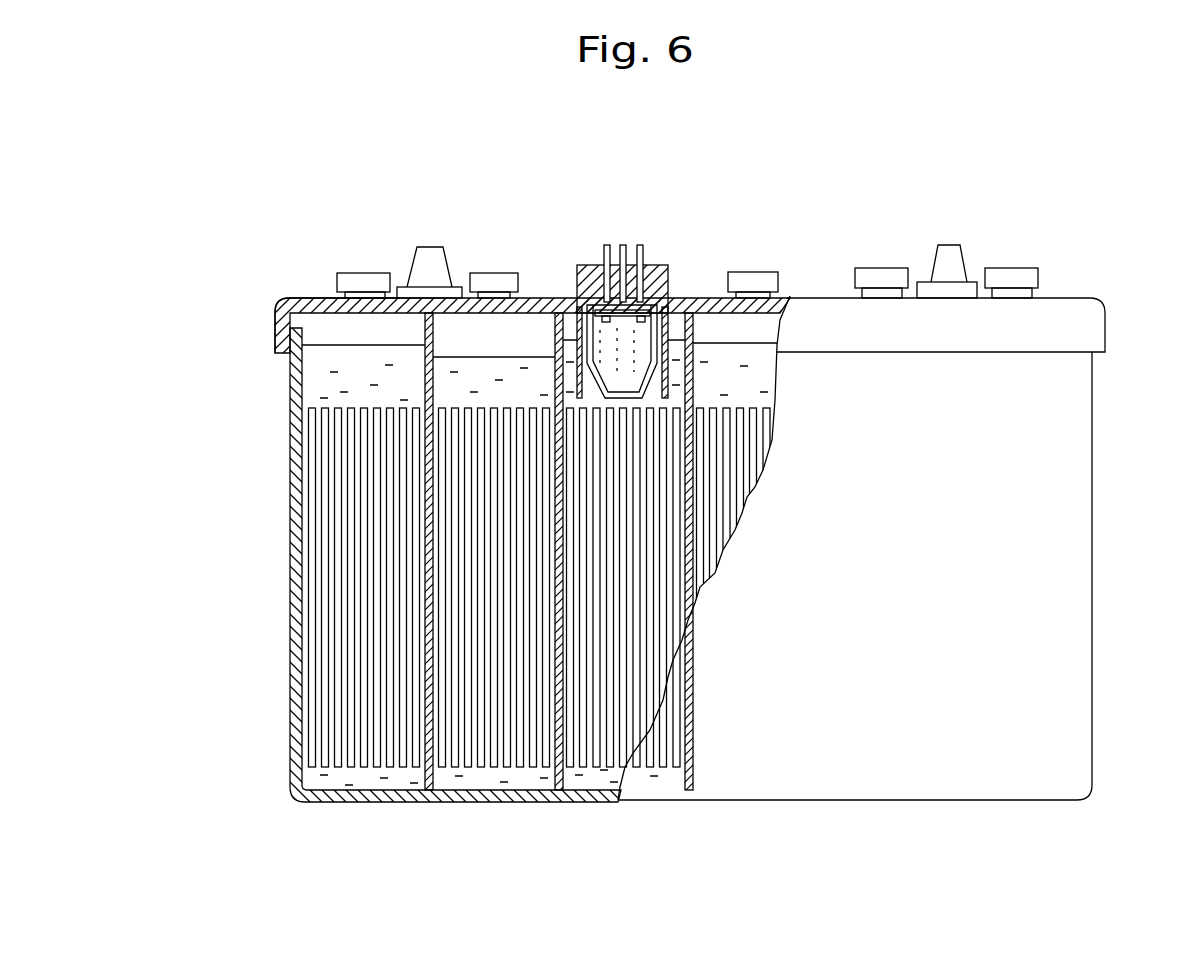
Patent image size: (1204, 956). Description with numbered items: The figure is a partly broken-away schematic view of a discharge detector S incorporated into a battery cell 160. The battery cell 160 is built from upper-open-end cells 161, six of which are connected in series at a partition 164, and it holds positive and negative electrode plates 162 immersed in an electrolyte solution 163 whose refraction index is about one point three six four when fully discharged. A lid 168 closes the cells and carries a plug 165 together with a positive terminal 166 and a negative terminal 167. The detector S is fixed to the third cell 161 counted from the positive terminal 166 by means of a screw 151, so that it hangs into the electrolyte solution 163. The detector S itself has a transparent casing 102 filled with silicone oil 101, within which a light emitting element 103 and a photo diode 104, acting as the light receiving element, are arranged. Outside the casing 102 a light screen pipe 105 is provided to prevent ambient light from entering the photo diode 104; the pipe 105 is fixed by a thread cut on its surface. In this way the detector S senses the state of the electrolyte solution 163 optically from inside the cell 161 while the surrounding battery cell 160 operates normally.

The battery cell 160 is at (288, 285).
The cell 161 is at (348, 770).
The electrode plate 162 is at (336, 667).
The electrolyte solution 163 is at (318, 390).
The partition 164 is at (422, 768).
The plug 165 is at (357, 273).
The positive terminal 166 is at (431, 250).
The negative terminal 167 is at (946, 252).
The lid 168 is at (283, 322).
The discharge detector S is at (652, 268).
The screw 151 is at (670, 305).
The silicone oil 101 is at (637, 358).
The transparent casing 102 is at (577, 347).
The light emitting element 103 is at (640, 320).
The photo diode 104 is at (604, 380).
The light screen pipe 105 is at (668, 373).